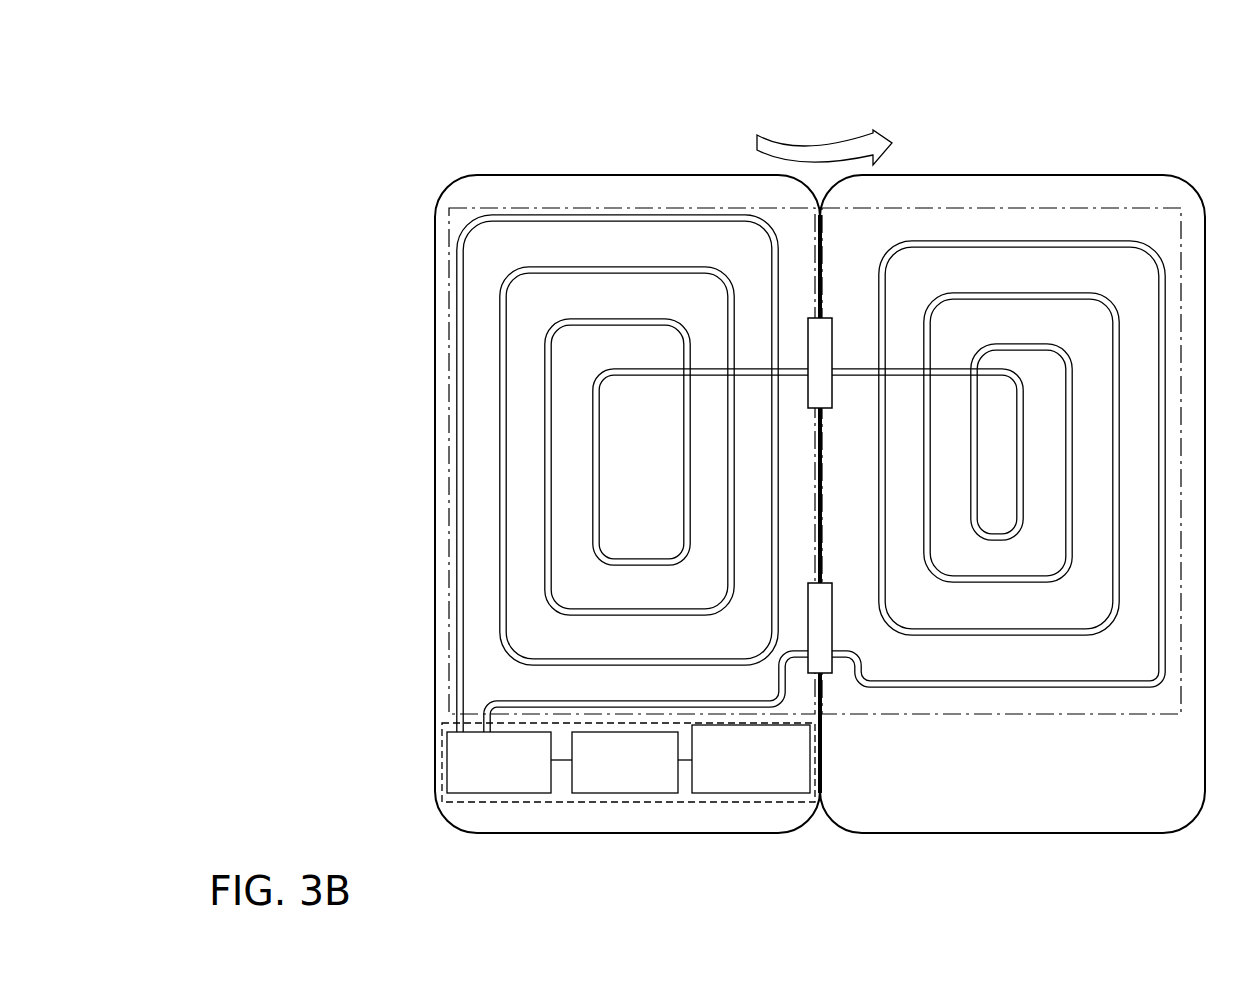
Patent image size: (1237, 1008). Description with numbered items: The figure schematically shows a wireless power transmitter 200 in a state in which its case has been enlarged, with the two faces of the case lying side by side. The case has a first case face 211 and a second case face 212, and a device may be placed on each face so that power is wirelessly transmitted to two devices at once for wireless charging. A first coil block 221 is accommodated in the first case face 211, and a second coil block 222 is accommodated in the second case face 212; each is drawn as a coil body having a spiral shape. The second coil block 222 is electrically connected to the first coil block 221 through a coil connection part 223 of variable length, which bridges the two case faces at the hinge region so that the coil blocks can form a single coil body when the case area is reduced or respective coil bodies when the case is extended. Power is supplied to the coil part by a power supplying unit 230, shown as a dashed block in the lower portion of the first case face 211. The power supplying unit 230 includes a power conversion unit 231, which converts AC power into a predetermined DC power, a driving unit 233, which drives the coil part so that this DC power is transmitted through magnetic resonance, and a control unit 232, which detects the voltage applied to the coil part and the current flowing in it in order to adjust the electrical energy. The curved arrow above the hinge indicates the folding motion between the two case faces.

The wireless power transmitter 200 is at (718, 61).
The first case face 211 is at (607, 183).
The second case face 212 is at (1025, 183).
The first coil block 221 is at (478, 215).
The second coil block 222 is at (1108, 243).
The coil connection part 223 is at (854, 372).
The power supplying unit 230 is at (558, 808).
The power conversion unit 231 is at (755, 793).
The control unit 232 is at (628, 793).
The driving unit 233 is at (500, 793).